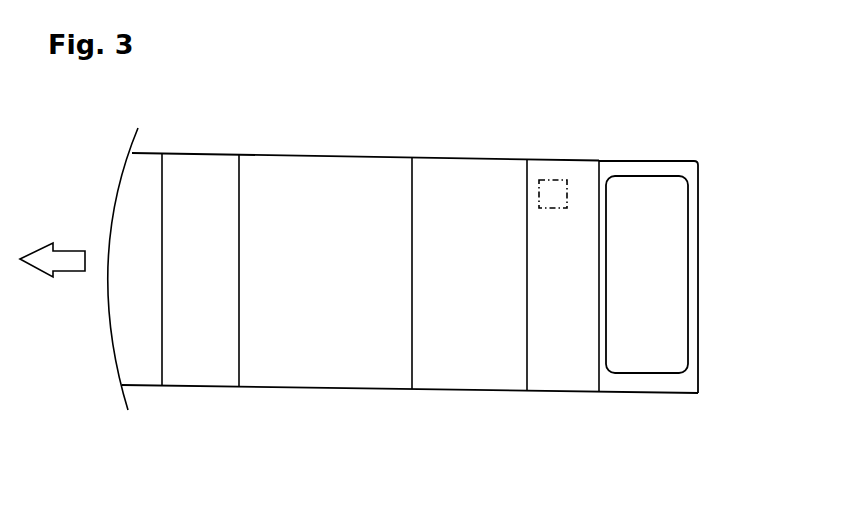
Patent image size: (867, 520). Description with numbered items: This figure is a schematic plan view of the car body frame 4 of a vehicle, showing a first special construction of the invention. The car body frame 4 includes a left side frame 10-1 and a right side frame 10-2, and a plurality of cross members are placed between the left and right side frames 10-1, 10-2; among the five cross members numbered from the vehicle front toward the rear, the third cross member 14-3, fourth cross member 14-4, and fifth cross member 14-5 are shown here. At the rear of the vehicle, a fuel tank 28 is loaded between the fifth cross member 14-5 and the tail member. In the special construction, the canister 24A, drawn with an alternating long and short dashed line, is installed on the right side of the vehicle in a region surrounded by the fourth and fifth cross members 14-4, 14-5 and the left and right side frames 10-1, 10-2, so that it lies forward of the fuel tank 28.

The car body frame 4 is at (598, 106).
The left side frame 10-1 is at (278, 386).
The right side frame 10-2 is at (270, 153).
The third cross member 14-3 is at (412, 353).
The fourth cross member 14-4 is at (527, 356).
The fifth cross member 14-5 is at (599, 374).
The canister 24A is at (553, 180).
The fuel tank 28 is at (670, 300).